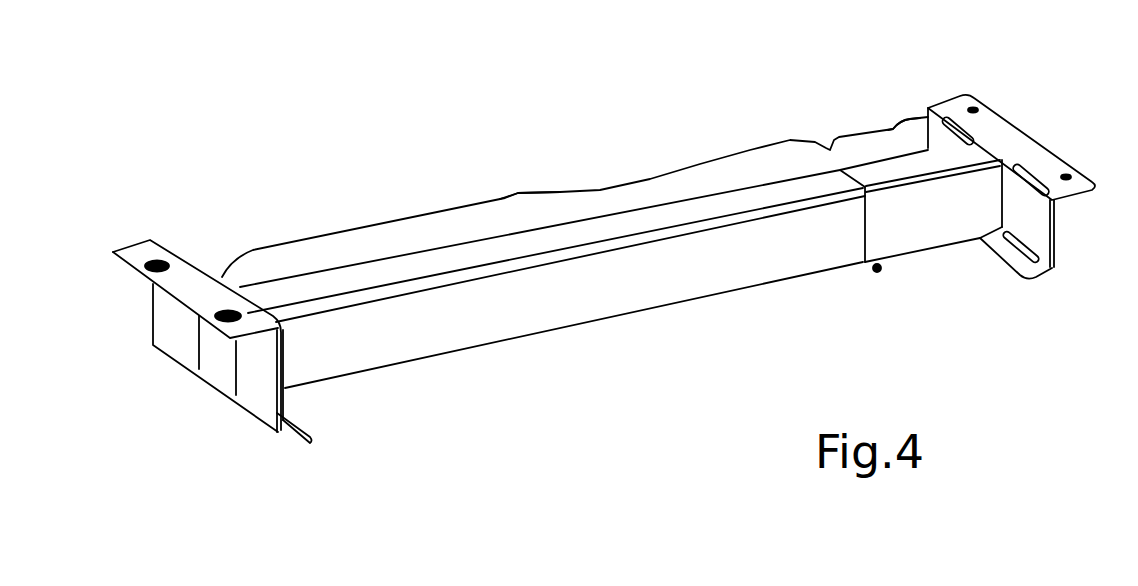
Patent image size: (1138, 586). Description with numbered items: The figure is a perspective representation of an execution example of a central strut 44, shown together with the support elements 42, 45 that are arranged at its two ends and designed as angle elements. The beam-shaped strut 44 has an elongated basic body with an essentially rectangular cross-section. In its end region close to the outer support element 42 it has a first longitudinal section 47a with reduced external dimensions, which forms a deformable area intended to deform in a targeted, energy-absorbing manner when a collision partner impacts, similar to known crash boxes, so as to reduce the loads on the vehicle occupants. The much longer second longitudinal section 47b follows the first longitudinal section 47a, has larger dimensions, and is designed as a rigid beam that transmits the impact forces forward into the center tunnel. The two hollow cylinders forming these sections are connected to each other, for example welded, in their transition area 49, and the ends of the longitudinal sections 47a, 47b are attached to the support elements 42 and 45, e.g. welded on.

The outer support element 42 is at (1025, 142).
The central strut 44 is at (655, 326).
The support element 45 is at (188, 280).
The first longitudinal section 47a is at (896, 129).
The second longitudinal section 47b is at (524, 186).
The transition area 49 is at (880, 270).